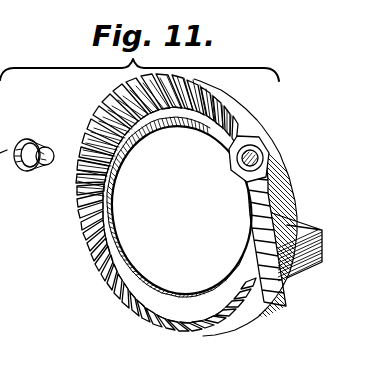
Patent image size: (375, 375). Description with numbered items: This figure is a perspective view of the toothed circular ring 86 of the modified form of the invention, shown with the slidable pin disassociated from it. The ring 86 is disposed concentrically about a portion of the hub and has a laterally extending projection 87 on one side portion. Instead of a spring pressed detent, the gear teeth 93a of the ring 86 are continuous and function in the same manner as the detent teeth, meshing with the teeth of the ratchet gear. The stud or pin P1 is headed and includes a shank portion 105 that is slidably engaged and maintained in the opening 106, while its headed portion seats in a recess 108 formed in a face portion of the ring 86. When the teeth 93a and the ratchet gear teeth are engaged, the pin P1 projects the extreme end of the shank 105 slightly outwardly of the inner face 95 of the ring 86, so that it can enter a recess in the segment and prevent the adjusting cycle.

The circular ring 86 is at (118, 202).
The laterally extending projection 87 is at (304, 266).
The gear teeth 93a is at (166, 322).
The inner face 95 is at (222, 108).
The shank portion 105 is at (60, 128).
The opening 106 is at (264, 157).
The recess 108 is at (250, 144).
The stud or pin P1 is at (29, 171).